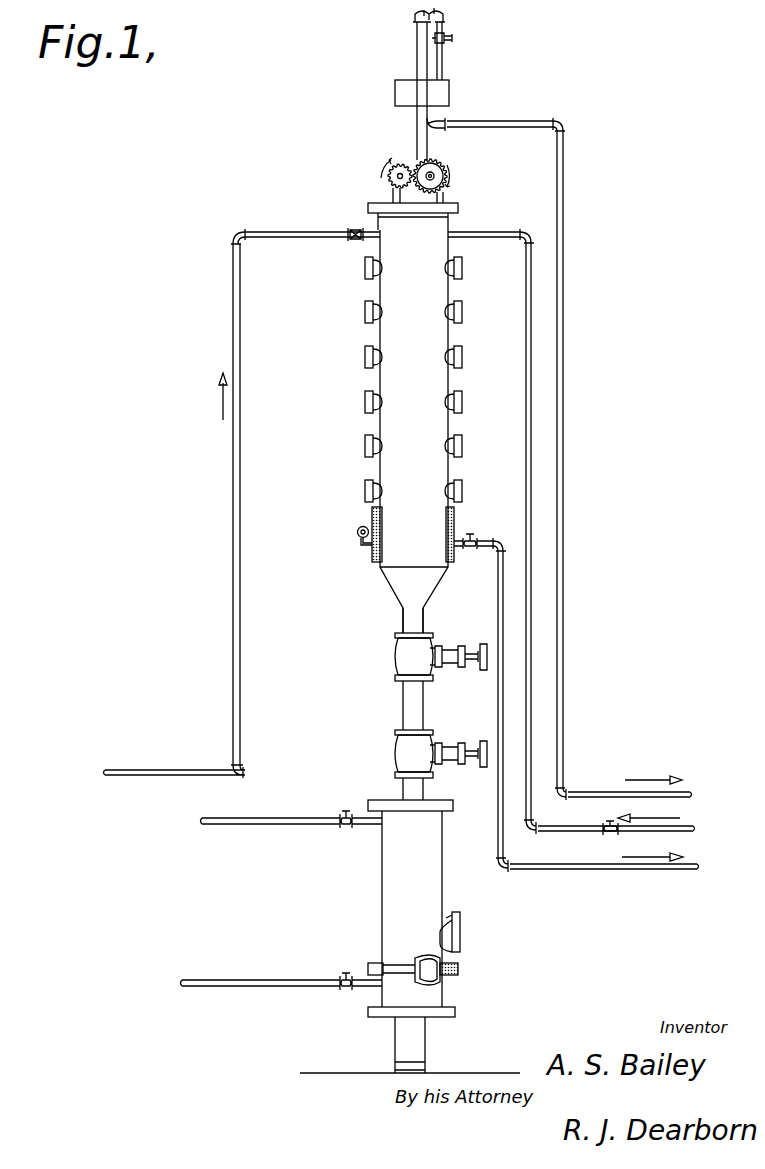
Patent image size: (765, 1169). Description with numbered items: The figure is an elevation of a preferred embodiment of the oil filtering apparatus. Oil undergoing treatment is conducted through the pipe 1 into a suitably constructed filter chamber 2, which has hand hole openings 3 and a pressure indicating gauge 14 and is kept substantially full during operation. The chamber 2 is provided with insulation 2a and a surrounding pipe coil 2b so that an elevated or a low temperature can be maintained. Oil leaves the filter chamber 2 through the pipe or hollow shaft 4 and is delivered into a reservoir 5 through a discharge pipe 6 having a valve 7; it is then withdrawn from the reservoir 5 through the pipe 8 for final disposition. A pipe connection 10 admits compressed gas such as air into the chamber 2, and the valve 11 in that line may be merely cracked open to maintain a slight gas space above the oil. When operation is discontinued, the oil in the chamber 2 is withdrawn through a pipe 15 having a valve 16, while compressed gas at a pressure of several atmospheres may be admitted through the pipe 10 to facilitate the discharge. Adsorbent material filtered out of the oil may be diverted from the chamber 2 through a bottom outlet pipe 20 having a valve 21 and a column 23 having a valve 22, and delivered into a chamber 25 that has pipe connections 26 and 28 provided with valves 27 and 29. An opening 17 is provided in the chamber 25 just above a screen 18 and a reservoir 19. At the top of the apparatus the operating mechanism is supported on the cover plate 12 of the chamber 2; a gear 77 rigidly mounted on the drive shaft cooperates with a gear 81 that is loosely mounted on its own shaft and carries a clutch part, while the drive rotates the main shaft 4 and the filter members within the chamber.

The pipe 1 is at (530, 380).
The filter chamber 2 is at (441, 293).
The insulation 2a is at (377, 552).
The pipe coil 2b is at (372, 516).
The hand hole openings 3 is at (364, 310).
The pipe or hollow shaft 4 is at (417, 122).
The reservoir 5 is at (395, 92).
The discharge pipe 6 is at (443, 72).
The valve 7 is at (452, 36).
The pipe 8 is at (527, 121).
The pipe connection 10 is at (287, 238).
The valve 11 is at (352, 242).
The cover plate 12 is at (458, 208).
The pressure indicating gauge 14 is at (357, 534).
The pipe 15 is at (497, 596).
The valve 16 is at (476, 538).
The opening 17 is at (460, 940).
The screen 18 is at (460, 969).
The reservoir 19 is at (440, 1003).
The bottom outlet pipe 20 is at (403, 623).
The valve 21 is at (407, 659).
The valve 22 is at (407, 756).
The column 23 is at (403, 707).
The chamber 25 is at (390, 897).
The pipe connection 26 is at (264, 826).
The valve 27 is at (346, 830).
The pipe connection 28 is at (242, 980).
The valve 29 is at (346, 972).
The gear 77 is at (445, 168).
The gear 81 is at (392, 180).